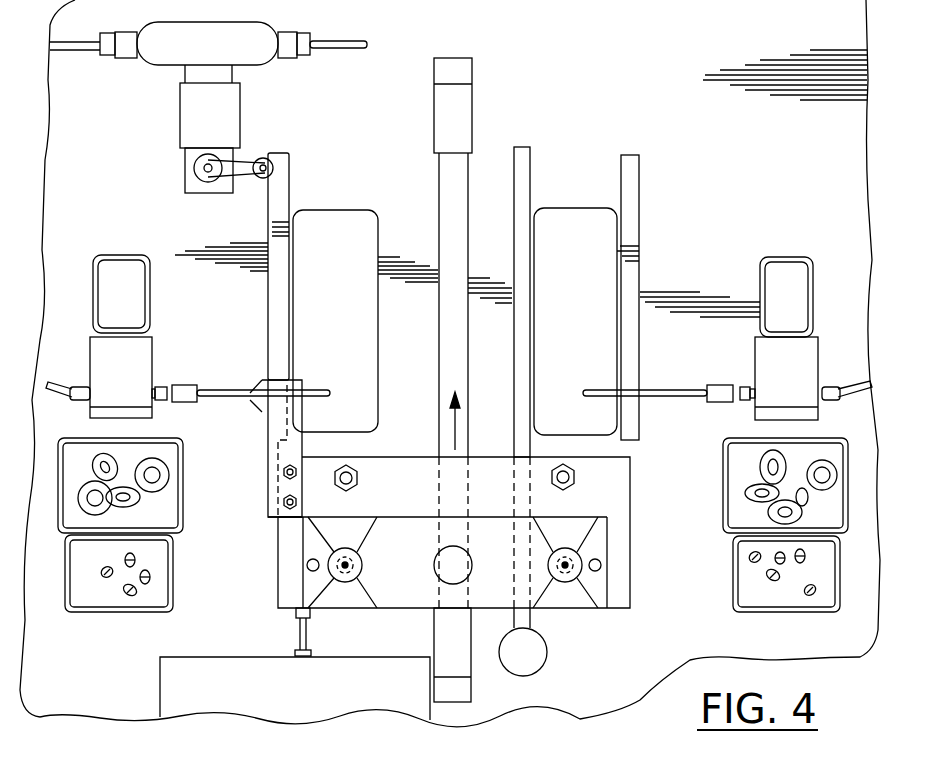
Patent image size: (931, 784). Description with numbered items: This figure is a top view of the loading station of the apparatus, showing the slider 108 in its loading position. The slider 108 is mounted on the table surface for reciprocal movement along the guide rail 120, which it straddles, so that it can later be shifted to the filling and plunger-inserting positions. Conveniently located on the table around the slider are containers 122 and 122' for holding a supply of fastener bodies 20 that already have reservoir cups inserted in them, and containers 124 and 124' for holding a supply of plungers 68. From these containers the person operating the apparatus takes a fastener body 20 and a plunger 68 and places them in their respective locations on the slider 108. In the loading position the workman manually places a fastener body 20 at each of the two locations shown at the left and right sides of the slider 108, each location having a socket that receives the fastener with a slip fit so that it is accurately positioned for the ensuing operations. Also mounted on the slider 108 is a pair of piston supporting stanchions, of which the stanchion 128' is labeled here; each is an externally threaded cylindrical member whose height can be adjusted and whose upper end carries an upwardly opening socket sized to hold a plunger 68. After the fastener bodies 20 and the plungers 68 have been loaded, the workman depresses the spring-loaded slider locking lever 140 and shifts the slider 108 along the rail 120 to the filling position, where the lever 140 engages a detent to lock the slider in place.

The fastener body 20 is at (145, 500).
The plunger 68 is at (148, 580).
The slider 108 is at (422, 567).
The guide rail 120 is at (456, 185).
The container 122 is at (152, 478).
The container 122' is at (747, 477).
The container 124 is at (125, 649).
The container 124' is at (740, 574).
The piston supporting stanchion 128' is at (628, 476).
The slider locking lever 140 is at (522, 665).